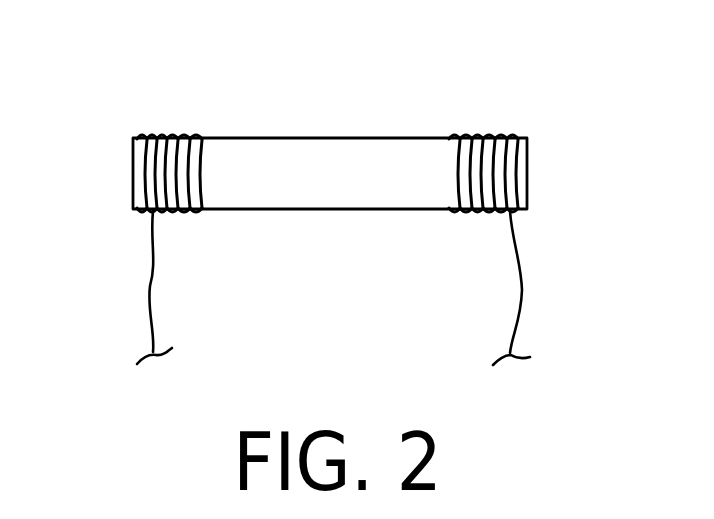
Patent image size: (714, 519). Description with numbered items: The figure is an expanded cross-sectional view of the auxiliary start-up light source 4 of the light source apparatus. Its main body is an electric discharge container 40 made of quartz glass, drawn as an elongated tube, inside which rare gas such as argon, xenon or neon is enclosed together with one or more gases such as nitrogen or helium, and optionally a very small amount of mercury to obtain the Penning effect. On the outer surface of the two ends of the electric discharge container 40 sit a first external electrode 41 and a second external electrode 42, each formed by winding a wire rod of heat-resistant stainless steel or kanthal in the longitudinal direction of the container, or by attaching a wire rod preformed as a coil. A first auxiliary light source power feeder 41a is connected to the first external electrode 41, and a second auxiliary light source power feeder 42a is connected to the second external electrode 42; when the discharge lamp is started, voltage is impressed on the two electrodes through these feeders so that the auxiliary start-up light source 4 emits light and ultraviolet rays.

The auxiliary start-up light source 4 is at (345, 120).
The electric discharge container 40 is at (346, 211).
The first external electrode 41 is at (495, 136).
The second external electrode 42 is at (162, 136).
The first auxiliary light source power feeder 41a is at (525, 292).
The second auxiliary light source power feeder 42a is at (148, 283).